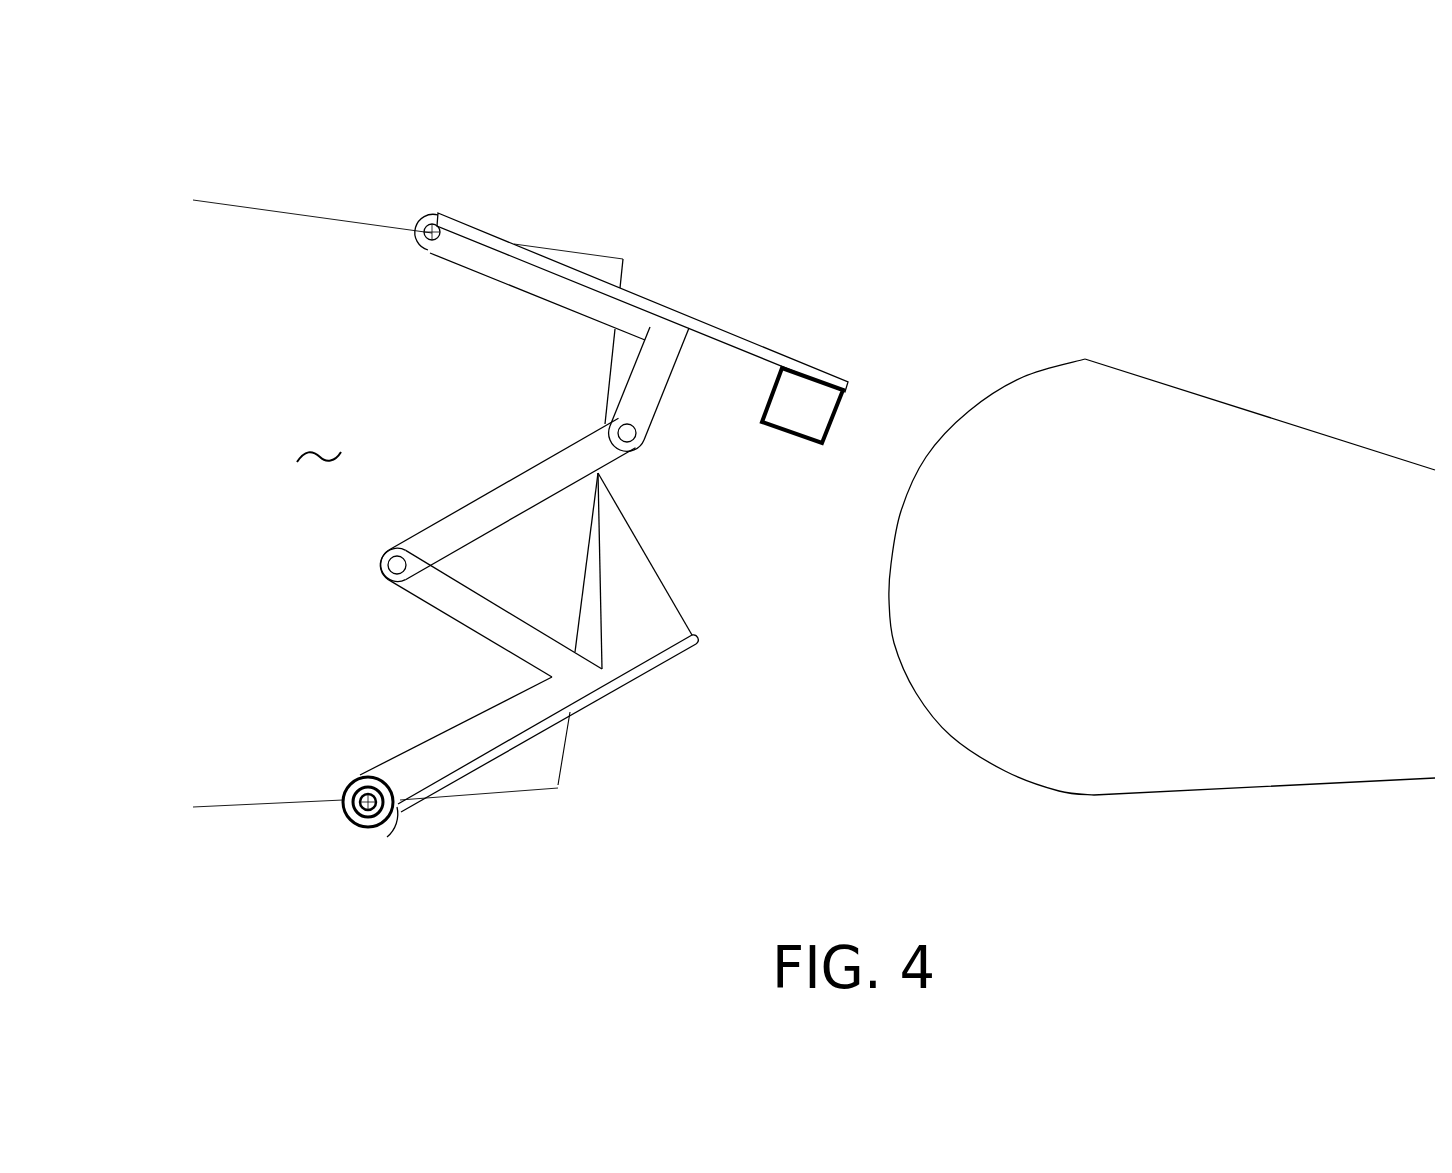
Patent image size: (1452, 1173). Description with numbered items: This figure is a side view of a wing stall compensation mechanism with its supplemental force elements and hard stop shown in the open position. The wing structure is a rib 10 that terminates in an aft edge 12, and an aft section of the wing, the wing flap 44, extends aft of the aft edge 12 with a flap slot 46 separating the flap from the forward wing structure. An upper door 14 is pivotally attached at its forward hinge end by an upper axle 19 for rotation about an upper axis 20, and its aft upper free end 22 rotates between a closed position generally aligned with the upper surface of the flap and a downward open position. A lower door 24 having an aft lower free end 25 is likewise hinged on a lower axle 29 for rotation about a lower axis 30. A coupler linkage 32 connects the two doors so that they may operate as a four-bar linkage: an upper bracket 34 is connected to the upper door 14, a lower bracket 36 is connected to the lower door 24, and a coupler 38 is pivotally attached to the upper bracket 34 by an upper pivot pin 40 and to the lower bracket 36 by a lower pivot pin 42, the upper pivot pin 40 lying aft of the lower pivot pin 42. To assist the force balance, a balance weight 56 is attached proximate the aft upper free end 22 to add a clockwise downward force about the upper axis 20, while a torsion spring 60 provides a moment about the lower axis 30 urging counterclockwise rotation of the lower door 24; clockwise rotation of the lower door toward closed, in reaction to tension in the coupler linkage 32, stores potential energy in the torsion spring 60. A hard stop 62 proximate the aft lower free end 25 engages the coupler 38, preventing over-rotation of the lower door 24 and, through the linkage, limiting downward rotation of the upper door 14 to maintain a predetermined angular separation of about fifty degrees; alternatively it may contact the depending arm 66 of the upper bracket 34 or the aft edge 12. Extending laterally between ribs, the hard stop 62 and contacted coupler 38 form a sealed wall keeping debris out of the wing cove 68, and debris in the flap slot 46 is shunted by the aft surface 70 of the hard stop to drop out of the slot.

The rib 10 is at (275, 273).
The upper axle 19 is at (432, 220).
The upper axis 20 is at (432, 250).
The upper door 14 is at (770, 347).
The aft upper free end 22 is at (840, 377).
The upper bracket 34 is at (567, 285).
The depending arm 66 is at (650, 395).
The upper pivot pin 40 is at (627, 433).
The balance weight 56 is at (807, 410).
The wing cove 68 is at (319, 442).
The coupler 38 is at (512, 497).
The lower pivot pin 42 is at (398, 567).
The coupler linkage 32 is at (700, 508).
The aft surface 70 is at (647, 555).
The aft edge 12 is at (585, 578).
The hard stop 62 is at (633, 612).
The aft lower free end 25 is at (692, 635).
The lower bracket 36 is at (496, 640).
The lower door 24 is at (643, 663).
The lower axis 30 is at (357, 780).
The flap slot 46 is at (714, 716).
The lower axle 29 is at (350, 823).
The torsion spring 60 is at (388, 827).
The wing flap 44 is at (1119, 683).